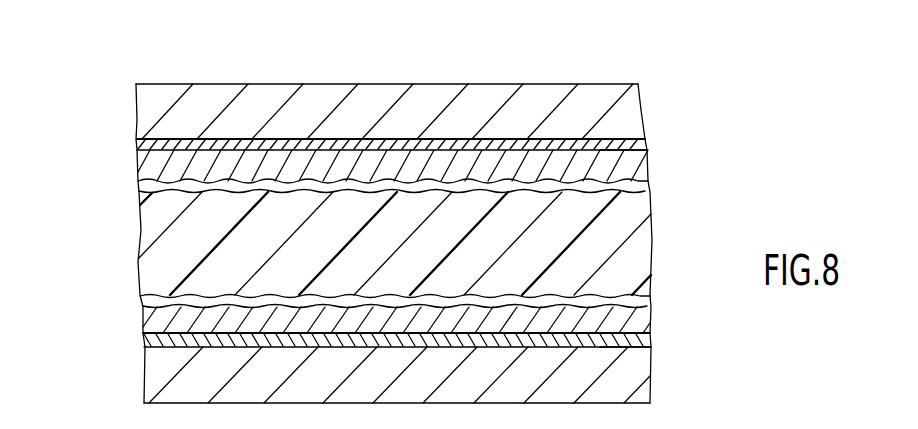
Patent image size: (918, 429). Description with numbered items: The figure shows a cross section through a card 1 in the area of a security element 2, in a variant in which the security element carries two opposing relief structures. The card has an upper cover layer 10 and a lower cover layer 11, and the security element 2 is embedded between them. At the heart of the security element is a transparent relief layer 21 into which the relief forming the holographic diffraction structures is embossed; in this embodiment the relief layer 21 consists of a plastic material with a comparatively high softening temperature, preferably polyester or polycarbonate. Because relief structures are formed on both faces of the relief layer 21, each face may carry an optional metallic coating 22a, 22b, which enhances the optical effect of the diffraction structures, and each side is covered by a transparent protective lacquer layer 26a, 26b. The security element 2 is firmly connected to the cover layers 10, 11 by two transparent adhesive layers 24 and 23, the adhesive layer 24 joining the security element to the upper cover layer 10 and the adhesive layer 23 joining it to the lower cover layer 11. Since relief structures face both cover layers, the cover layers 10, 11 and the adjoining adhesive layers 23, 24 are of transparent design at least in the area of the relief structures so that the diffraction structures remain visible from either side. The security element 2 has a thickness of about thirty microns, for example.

The card 1 is at (117, 84).
The card cover layer 10 is at (557, 103).
The adhesive layer 24 is at (150, 146).
The security element 2 is at (660, 328).
The metallic coating 22a is at (134, 186).
The relief layer 21 is at (165, 243).
The metallic coating 22b is at (150, 301).
The adhesive layer 23 is at (152, 343).
The card cover layer 11 is at (162, 375).
The protective lacquer layer 26a is at (647, 148).
The protective lacquer layer 26b is at (626, 306).